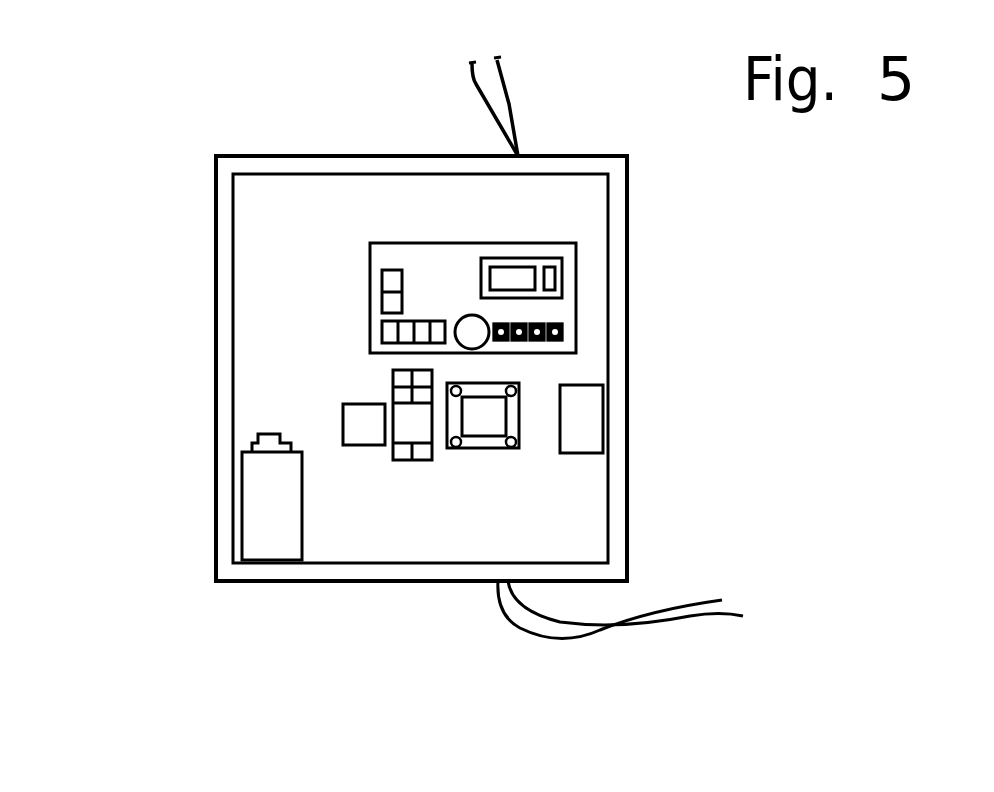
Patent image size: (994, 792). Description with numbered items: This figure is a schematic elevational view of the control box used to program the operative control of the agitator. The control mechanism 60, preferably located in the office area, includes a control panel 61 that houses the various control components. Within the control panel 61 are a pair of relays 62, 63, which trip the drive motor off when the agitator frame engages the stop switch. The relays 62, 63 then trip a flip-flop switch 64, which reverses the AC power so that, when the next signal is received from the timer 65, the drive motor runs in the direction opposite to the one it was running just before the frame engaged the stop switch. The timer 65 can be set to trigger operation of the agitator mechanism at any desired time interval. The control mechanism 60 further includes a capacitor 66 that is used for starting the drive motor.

The control mechanism 60 is at (192, 141).
The control panel 61 is at (216, 231).
The relay 62 is at (343, 418).
The relay 63 is at (477, 432).
The flip-flop switch 64 is at (588, 416).
The timer 65 is at (557, 249).
The capacitor 66 is at (268, 506).